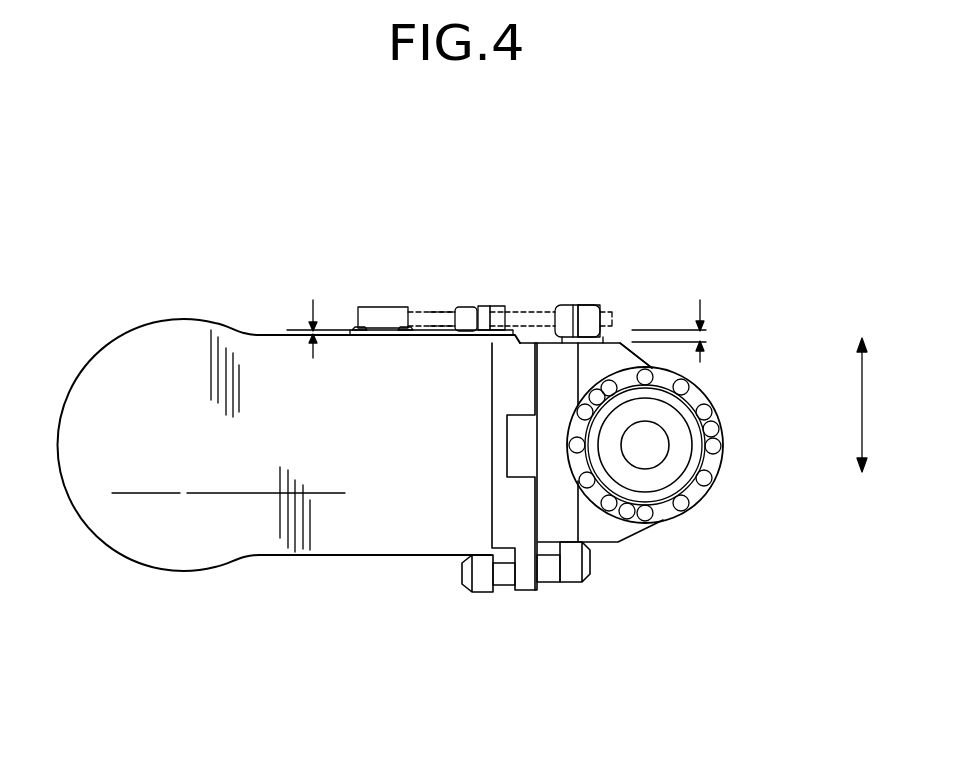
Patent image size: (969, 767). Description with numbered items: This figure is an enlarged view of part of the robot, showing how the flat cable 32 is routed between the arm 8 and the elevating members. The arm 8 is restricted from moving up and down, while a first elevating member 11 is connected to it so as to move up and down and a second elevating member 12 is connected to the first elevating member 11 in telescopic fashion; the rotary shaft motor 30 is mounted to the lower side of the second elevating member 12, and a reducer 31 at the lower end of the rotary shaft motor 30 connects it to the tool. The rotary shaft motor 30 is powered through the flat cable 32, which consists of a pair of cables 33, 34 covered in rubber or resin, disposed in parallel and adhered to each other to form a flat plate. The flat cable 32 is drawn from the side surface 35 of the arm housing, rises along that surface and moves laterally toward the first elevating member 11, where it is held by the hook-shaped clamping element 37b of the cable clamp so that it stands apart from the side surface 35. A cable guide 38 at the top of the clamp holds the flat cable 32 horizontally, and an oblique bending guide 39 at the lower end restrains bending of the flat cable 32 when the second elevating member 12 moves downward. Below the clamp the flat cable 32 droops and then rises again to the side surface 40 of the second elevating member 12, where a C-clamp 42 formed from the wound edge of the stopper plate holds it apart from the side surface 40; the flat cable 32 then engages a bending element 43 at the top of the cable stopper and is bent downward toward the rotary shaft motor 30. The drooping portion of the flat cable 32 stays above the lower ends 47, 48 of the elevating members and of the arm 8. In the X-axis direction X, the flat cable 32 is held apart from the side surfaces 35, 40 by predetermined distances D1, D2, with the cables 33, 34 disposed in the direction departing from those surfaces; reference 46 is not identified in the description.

The arm 8 is at (216, 550).
The first elevating member 11 is at (507, 540).
The second elevating member 12 is at (547, 535).
The rotary shaft motor 30 is at (678, 445).
The reducer 31 is at (706, 496).
The flat cable 32 is at (542, 310).
The cable 33 is at (417, 313).
The cable 34 is at (443, 310).
The side surface 35 is at (343, 330).
The clamping element 37b is at (495, 307).
The cable guide 38 is at (466, 308).
The bending guide 39 is at (487, 308).
The side surface 40 is at (618, 342).
The C-clamp 42 is at (573, 305).
The bending element 43 is at (590, 305).
The bearing housing 46 is at (570, 527).
The lower end 47 is at (505, 502).
The lower end 48 is at (448, 515).
The predetermined distance D1 is at (692, 331).
The predetermined distance D2 is at (302, 329).
The X-axis direction X is at (874, 405).